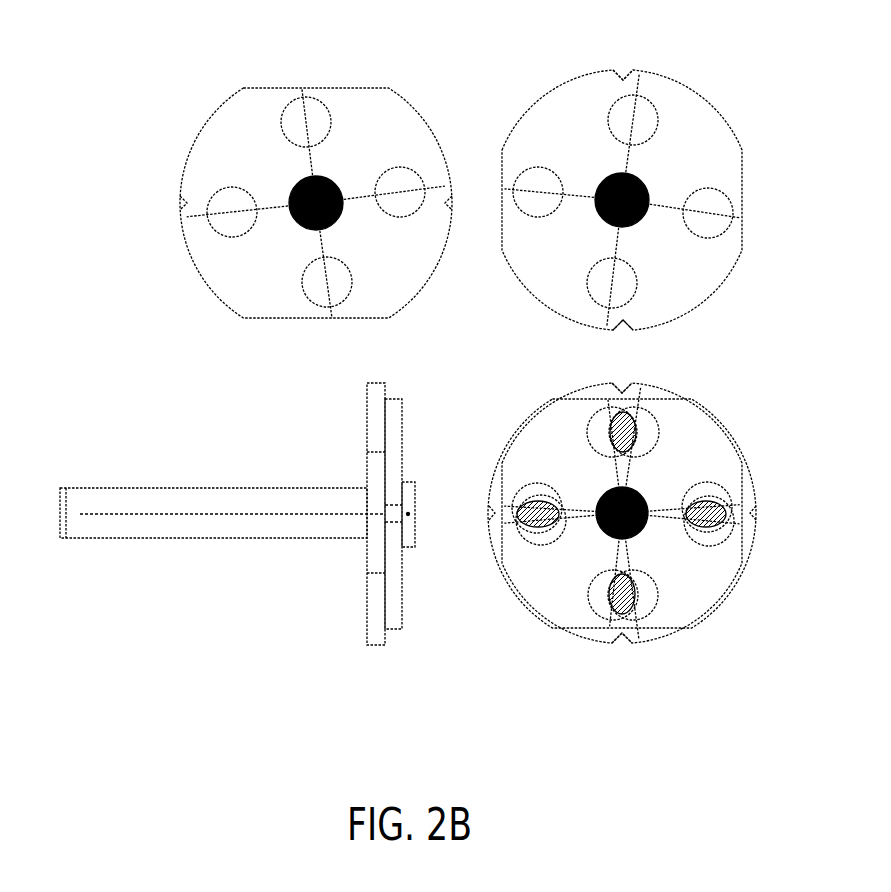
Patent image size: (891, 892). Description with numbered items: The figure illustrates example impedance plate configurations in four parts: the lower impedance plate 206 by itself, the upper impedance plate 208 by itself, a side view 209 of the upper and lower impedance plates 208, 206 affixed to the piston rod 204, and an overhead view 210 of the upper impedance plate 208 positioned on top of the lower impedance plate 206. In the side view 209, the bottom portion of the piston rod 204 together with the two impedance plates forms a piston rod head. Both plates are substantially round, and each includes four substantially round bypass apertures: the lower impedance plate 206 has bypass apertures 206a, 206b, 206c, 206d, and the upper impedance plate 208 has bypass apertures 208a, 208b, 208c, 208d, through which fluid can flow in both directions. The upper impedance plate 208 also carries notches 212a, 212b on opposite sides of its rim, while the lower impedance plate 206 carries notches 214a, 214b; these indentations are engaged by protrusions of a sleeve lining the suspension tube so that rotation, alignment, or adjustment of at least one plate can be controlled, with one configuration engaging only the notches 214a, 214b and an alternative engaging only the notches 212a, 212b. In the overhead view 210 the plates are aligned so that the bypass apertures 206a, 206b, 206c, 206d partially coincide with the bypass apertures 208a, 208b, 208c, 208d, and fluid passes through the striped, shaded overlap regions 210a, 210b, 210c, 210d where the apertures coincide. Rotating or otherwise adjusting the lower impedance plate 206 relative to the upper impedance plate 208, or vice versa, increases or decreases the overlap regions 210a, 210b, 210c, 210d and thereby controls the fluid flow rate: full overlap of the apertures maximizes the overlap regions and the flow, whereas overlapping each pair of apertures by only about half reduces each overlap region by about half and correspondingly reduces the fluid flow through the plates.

The piston rod 204 is at (213, 488).
The lower impedance plate 206 is at (525, 113).
The bypass aperture 206a is at (652, 100).
The bypass aperture 206b is at (545, 167).
The bypass aperture 206c is at (595, 267).
The bypass aperture 206d is at (713, 188).
The upper impedance plate 208 is at (278, 86).
The bypass aperture 208a is at (330, 107).
The bypass aperture 208b is at (226, 188).
The bypass aperture 208c is at (340, 270).
The bypass aperture 208d is at (405, 168).
The side view 209 is at (163, 447).
The overhead view 210 is at (738, 391).
The overlap region 210a is at (622, 420).
The overlap region 210b is at (517, 510).
The overlap region 210c is at (622, 613).
The overlap region 210d is at (725, 515).
The notch 212a is at (185, 203).
The notch 212b is at (444, 205).
The notch 214a is at (623, 80).
The notch 214b is at (617, 325).